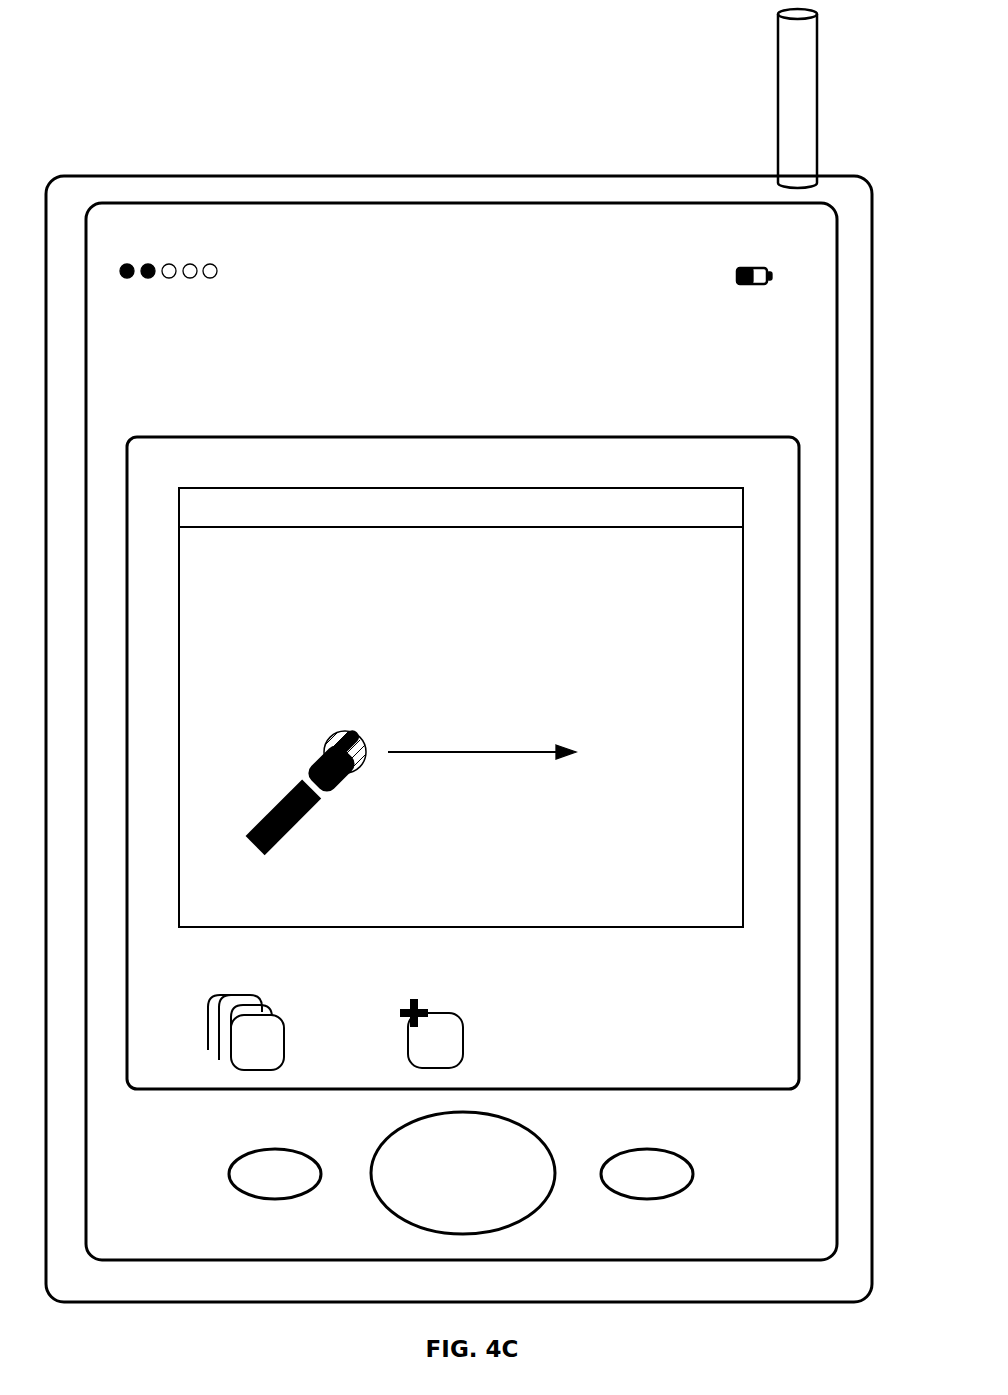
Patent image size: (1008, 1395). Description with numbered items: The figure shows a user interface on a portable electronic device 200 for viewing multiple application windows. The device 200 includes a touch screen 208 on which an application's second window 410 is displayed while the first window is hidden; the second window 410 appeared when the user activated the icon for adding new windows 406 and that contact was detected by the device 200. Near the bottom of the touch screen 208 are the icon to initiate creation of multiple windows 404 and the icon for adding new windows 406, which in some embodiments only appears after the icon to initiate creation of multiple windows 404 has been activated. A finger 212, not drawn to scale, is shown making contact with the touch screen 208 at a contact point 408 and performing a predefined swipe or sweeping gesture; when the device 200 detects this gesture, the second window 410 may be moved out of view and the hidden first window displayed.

The portable electronic device 200 is at (702, 124).
The touch screen 208 is at (463, 763).
The finger 212 is at (262, 858).
The icon to initiate creation of multiple windows 404 is at (286, 1042).
The icon for adding new windows 406 is at (463, 1050).
The finger contact / gesture 408 is at (346, 731).
The second window 410 is at (461, 707).